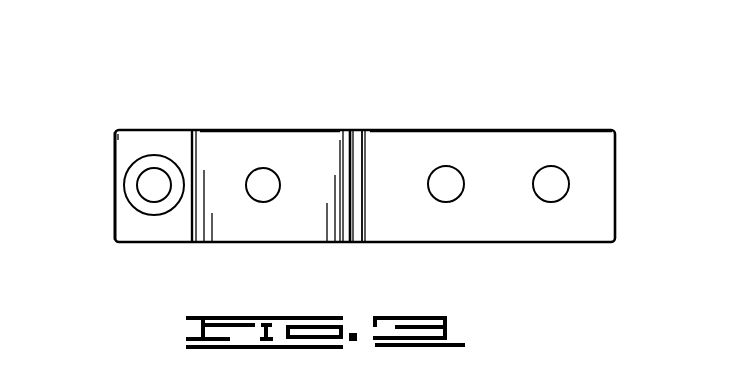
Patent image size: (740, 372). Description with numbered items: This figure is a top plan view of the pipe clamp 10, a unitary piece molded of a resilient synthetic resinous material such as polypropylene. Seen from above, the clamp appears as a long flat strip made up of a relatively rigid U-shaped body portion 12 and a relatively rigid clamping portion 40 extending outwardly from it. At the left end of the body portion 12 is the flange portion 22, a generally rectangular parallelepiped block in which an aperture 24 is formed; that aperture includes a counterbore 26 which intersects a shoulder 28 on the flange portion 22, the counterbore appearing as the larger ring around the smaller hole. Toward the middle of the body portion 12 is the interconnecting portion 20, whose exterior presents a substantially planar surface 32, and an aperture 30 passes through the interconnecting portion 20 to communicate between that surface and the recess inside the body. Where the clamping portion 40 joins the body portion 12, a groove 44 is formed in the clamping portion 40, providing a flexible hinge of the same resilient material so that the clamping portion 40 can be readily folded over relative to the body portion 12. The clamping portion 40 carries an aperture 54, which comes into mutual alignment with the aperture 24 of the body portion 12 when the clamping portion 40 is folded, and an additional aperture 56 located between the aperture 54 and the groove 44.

The pipe clamp 10 is at (357, 110).
The U-shaped body portion 12 is at (322, 145).
The interconnecting portion 20 is at (291, 141).
The flange portion 22 is at (122, 225).
The aperture 24 is at (161, 170).
The counterbore 26 is at (144, 158).
The shoulder 28 is at (122, 134).
The aperture 30 is at (263, 168).
The planar surface 32 is at (222, 141).
The clamping portion 40 is at (425, 140).
The groove 44 is at (357, 150).
The aperture 54 is at (558, 176).
The additional aperture 56 is at (452, 176).